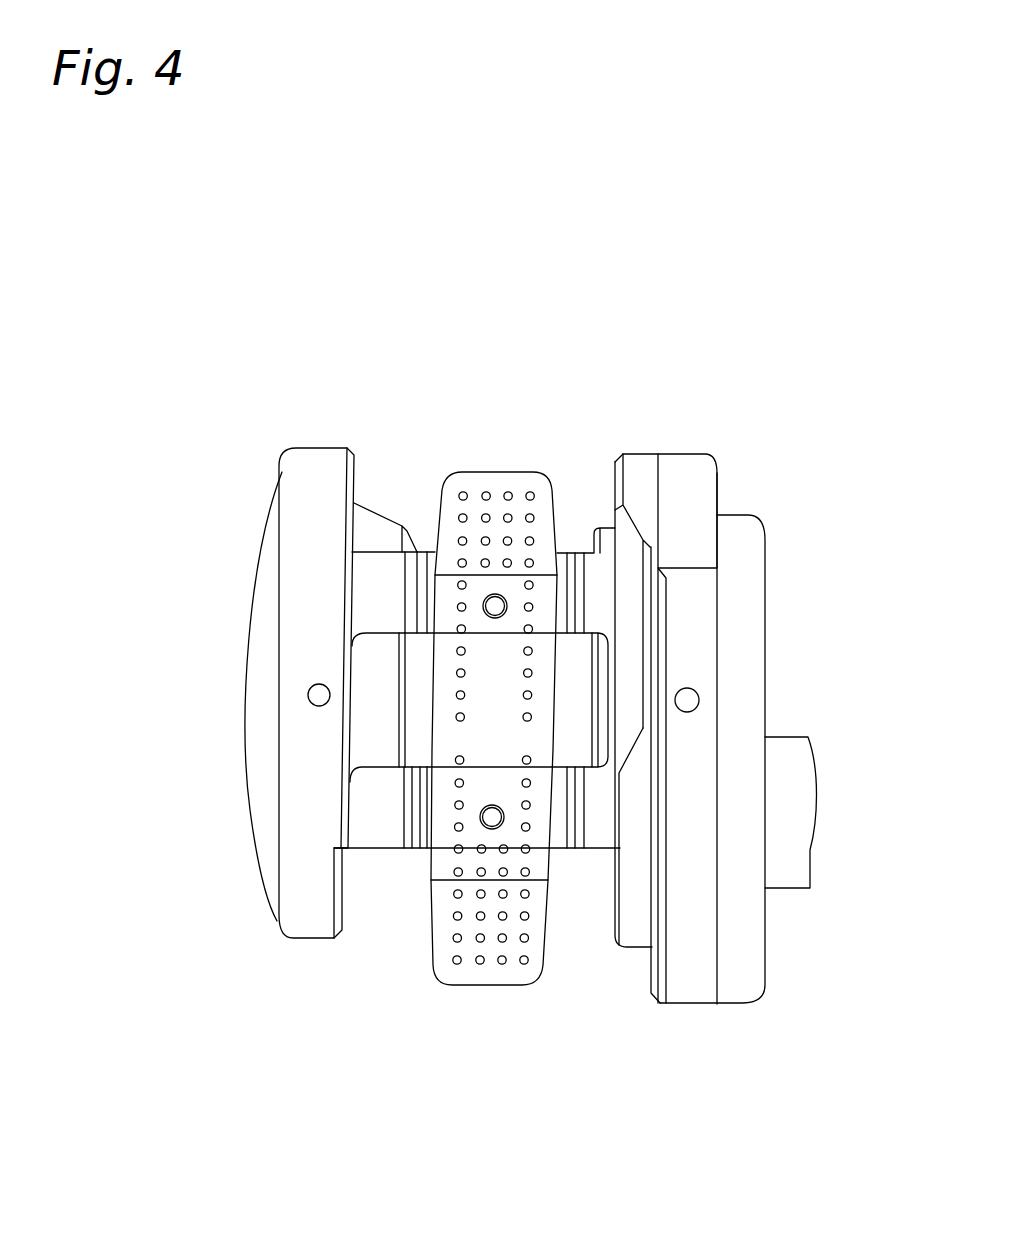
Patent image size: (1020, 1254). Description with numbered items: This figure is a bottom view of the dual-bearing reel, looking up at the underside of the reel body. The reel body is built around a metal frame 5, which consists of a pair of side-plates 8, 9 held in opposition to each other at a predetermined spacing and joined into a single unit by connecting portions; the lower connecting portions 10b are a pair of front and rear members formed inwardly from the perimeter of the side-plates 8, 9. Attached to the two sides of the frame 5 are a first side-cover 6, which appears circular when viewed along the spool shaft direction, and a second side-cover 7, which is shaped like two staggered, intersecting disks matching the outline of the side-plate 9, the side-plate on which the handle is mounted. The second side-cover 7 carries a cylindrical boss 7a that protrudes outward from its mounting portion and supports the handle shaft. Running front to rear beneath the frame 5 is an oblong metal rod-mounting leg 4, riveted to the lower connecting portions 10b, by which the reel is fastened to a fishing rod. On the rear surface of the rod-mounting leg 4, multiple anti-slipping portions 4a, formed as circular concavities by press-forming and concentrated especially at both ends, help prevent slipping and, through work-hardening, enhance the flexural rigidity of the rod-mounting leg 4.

The rod-mounting leg 4 is at (520, 703).
The anti-slipping portions 4a is at (527, 962).
The frame 5 is at (633, 428).
The first side-cover 6 is at (258, 651).
The second side-cover 7 is at (767, 638).
The cylindrical boss 7a is at (797, 748).
The side-plate 8 is at (327, 458).
The side-plate 9 is at (648, 467).
The lower connecting portions 10b is at (375, 606).